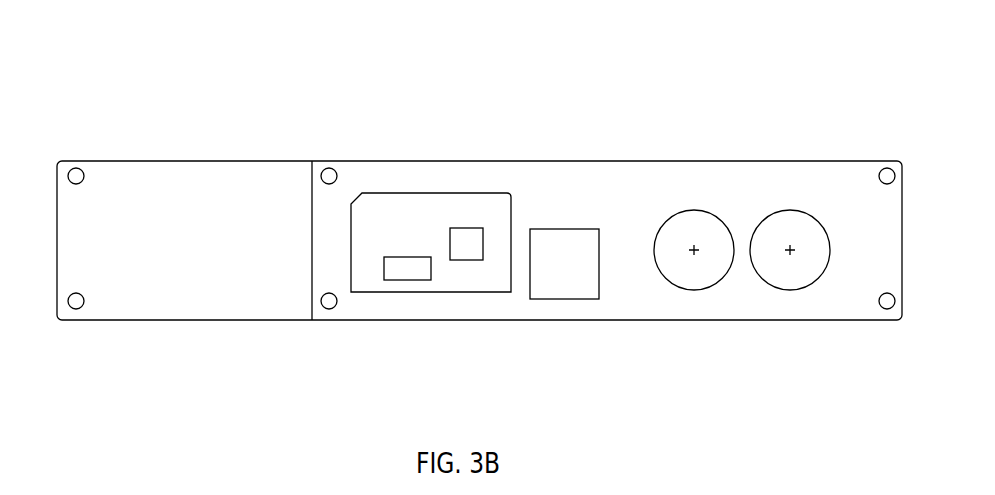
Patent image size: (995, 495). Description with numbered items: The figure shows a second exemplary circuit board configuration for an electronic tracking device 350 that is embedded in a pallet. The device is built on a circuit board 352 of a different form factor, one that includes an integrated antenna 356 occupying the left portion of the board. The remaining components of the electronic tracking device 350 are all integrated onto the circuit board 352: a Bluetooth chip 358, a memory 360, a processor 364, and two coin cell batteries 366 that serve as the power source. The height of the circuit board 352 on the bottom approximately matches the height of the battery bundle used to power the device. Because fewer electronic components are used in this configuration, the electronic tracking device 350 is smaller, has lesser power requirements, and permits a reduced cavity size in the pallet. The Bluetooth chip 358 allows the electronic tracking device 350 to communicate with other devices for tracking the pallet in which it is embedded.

The electronic tracking device 350 is at (446, 67).
The circuit board 352 is at (588, 161).
The integrated antenna 356 is at (166, 161).
The Bluetooth chip 358 is at (393, 268).
The memory 360 is at (471, 254).
The processor 364 is at (563, 282).
The coin cell batteries 366 is at (693, 282).